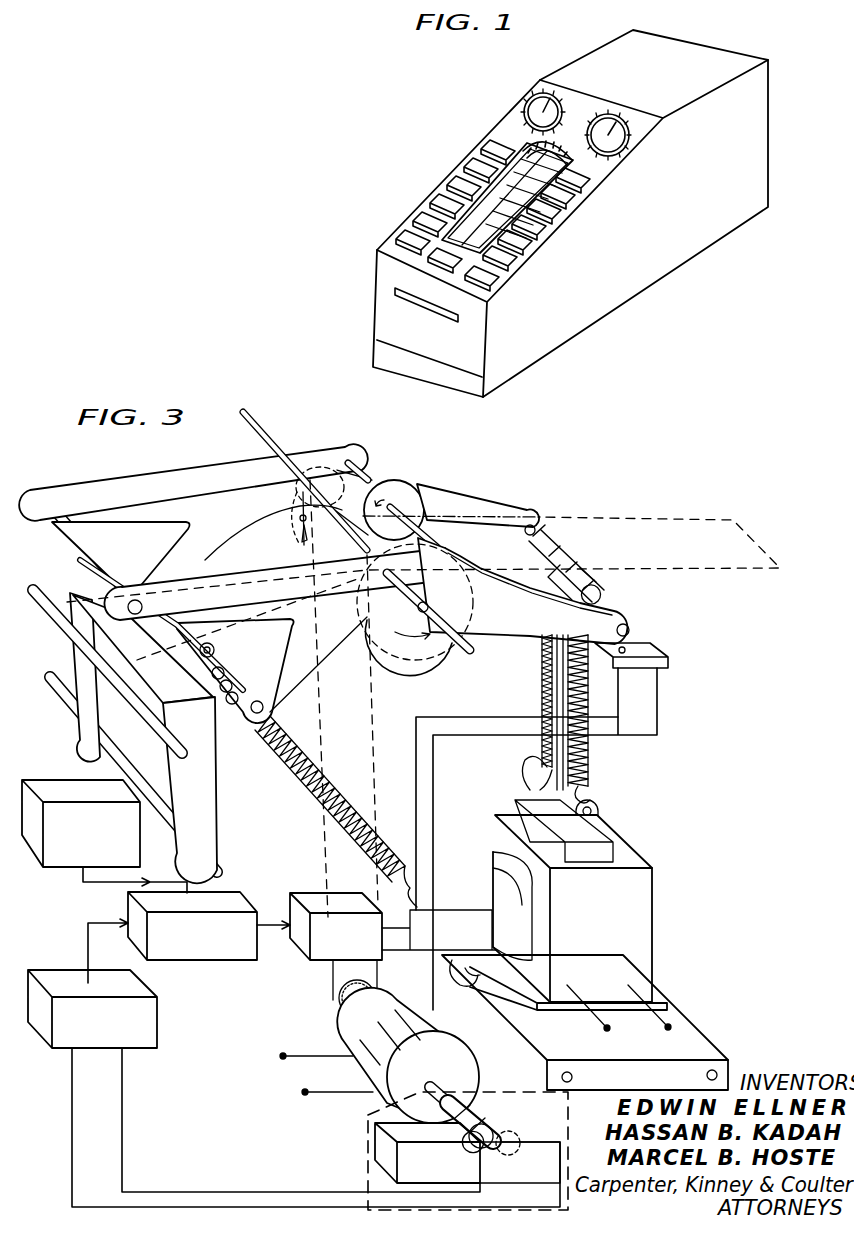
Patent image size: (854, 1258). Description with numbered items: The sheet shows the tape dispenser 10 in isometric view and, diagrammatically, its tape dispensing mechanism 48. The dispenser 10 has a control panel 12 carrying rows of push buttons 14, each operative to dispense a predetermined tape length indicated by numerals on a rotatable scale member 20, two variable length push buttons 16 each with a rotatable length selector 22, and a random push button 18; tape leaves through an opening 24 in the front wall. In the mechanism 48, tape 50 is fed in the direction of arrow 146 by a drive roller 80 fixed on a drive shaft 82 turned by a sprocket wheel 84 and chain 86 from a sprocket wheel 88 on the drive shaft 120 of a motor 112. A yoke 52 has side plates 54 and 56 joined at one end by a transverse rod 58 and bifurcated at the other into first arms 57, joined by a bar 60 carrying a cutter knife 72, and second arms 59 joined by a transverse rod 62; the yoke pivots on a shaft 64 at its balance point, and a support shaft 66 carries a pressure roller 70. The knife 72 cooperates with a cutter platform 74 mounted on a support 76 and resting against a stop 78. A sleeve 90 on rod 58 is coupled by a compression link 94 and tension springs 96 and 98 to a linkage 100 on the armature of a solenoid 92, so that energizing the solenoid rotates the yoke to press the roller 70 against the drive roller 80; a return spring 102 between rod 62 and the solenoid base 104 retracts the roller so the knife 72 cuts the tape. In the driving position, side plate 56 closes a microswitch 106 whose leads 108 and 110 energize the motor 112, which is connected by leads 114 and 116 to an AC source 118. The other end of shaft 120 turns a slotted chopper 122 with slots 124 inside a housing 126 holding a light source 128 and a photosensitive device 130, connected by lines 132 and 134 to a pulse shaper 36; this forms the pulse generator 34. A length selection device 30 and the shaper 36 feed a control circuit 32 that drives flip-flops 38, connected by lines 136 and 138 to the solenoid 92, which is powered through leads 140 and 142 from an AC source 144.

In FIG. 1, the tape dispenser 10 is at (709, 42).
In FIG. 1, the control panel 12 is at (502, 128).
In FIG. 1, the push buttons 14 is at (450, 175).
In FIG. 1, the variable length push buttons 16 is at (403, 238).
In FIG. 1, the random push button 18 is at (445, 256).
In FIG. 1, the rotatable scale member 20 is at (573, 161).
In FIG. 1, the rotatable length selector 22 is at (608, 123).
In FIG. 1, the opening 24 is at (422, 305).
In FIG. 3, the length selection device 30 is at (75, 783).
In FIG. 3, the control circuit 32 is at (130, 903).
In FIG. 3, the pulse generator 34 is at (368, 1128).
In FIG. 3, the pulse shaper 36 is at (60, 975).
In FIG. 3, the flip-flops 38 is at (318, 898).
In FIG. 3, the tape dispensing mechanism 48 is at (610, 470).
In FIG. 3, the tape 50 is at (668, 519).
In FIG. 3, the yoke 52 is at (128, 457).
In FIG. 3, the side plate 54 is at (471, 507).
In FIG. 3, the side plate 56 is at (523, 591).
In FIG. 3, the first arm 57 is at (236, 532).
In FIG. 3, the transverse rod 58 is at (525, 530).
In FIG. 3, the second arm 59 is at (172, 577).
In FIG. 3, the bar 60 is at (84, 546).
In FIG. 3, the transverse rod 62 is at (216, 655).
In FIG. 3, the pivot shaft 64 is at (300, 478).
In FIG. 3, the pressure roller support shaft 66 is at (360, 472).
In FIG. 3, the pressure roller 70 is at (398, 491).
In FIG. 3, the cutter knife 72 is at (70, 563).
In FIG. 3, the cutter platform 74 is at (143, 738).
In FIG. 3, the cutter platform support 76 is at (62, 700).
In FIG. 3, the cutter platform stop 78 is at (62, 628).
In FIG. 3, the drive roller 80 is at (406, 645).
In FIG. 3, the drive shaft 82 is at (458, 630).
In FIG. 3, the sprocket wheel 84 is at (300, 506).
In FIG. 3, the chain 86 is at (302, 531).
In FIG. 3, the sprocket wheel 88 is at (340, 1003).
In FIG. 3, the sleeve 90 is at (548, 543).
In FIG. 3, the solenoid 92 is at (572, 901).
In FIG. 3, the compression link 94 is at (545, 674).
In FIG. 3, the tension spring 96 is at (565, 700).
In FIG. 3, the tension spring 98 is at (590, 757).
In FIG. 3, the linkage 100 is at (600, 818).
In FIG. 3, the spring 102 is at (294, 784).
In FIG. 3, the base 104 is at (662, 993).
In FIG. 3, the microswitch 106 is at (655, 650).
In FIG. 3, the lead 108 is at (470, 716).
In FIG. 3, the lead 110 is at (660, 712).
In FIG. 3, the motor 112 is at (408, 1055).
In FIG. 3, the lead 114 is at (305, 1055).
In FIG. 3, the lead 116 is at (352, 1094).
In FIG. 3, the alternating current source 118 is at (293, 1087).
In FIG. 3, the drive shaft 120 is at (450, 1070).
In FIG. 3, the chopper 122 is at (466, 1110).
In FIG. 3, the slots 124 is at (477, 1133).
In FIG. 3, the housing 126 is at (383, 1155).
In FIG. 3, the light source 128 is at (452, 1155).
In FIG. 3, the photosensitive device 130 is at (520, 1157).
In FIG. 3, the line 132 is at (260, 1192).
In FIG. 3, the line 134 is at (70, 1177).
In FIG. 3, the line 136 is at (456, 974).
In FIG. 3, the line 138 is at (455, 927).
In FIG. 3, the lead 140 is at (592, 1022).
In FIG. 3, the lead 142 is at (690, 1019).
In FIG. 3, the alternating current source 144 is at (658, 1033).
In FIG. 3, the arrow 146 is at (642, 546).